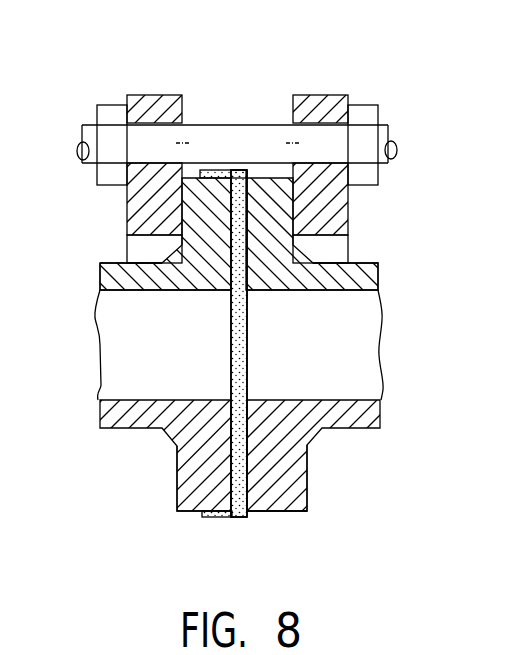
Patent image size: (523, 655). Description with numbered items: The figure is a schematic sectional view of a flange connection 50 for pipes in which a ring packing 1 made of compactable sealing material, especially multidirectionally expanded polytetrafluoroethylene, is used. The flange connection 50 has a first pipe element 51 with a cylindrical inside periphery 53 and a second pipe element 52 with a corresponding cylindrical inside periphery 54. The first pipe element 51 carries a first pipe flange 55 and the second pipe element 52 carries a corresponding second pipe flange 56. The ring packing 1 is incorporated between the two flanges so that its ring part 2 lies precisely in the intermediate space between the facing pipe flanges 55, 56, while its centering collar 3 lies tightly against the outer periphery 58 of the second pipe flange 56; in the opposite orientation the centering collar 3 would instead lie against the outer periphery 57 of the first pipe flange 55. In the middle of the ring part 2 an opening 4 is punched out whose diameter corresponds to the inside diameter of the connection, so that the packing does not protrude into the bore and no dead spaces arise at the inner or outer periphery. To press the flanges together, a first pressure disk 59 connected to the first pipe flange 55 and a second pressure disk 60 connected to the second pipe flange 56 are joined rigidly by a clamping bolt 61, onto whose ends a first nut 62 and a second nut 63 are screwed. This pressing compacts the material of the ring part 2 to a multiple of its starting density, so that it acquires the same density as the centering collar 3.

The ring packing 1 is at (254, 470).
The ring part 2 is at (243, 291).
The centering collar 3 is at (231, 170).
The opening 4 is at (247, 390).
The flange connection 50 is at (237, 83).
The first pipe element 51 is at (377, 277).
The second pipe element 52 is at (106, 277).
The cylindrical inside periphery 53 is at (360, 291).
The cylindrical inside periphery 54 is at (197, 291).
The first pipe flange 55 is at (297, 502).
The second pipe flange 56 is at (182, 487).
The outer periphery 57 is at (293, 513).
The outer periphery 58 is at (190, 510).
The first pressure disk 59 is at (349, 218).
The second pressure disk 60 is at (132, 209).
The clamping bolt 61 is at (200, 135).
The first nut 62 is at (112, 115).
The second nut 63 is at (370, 112).